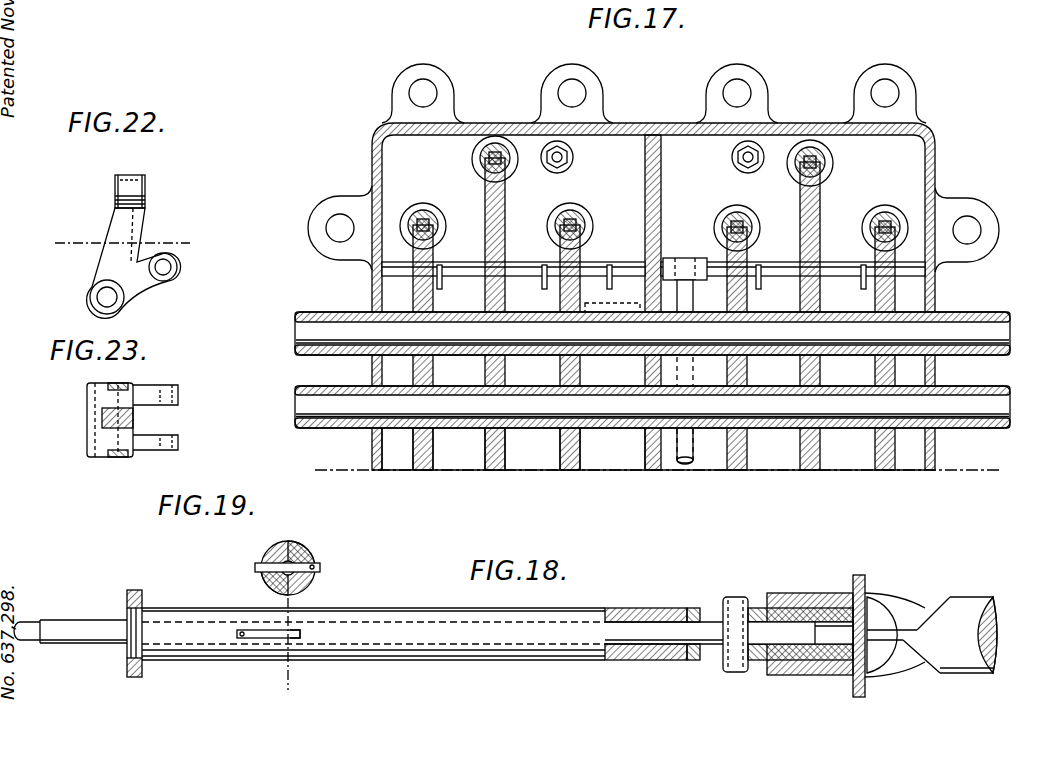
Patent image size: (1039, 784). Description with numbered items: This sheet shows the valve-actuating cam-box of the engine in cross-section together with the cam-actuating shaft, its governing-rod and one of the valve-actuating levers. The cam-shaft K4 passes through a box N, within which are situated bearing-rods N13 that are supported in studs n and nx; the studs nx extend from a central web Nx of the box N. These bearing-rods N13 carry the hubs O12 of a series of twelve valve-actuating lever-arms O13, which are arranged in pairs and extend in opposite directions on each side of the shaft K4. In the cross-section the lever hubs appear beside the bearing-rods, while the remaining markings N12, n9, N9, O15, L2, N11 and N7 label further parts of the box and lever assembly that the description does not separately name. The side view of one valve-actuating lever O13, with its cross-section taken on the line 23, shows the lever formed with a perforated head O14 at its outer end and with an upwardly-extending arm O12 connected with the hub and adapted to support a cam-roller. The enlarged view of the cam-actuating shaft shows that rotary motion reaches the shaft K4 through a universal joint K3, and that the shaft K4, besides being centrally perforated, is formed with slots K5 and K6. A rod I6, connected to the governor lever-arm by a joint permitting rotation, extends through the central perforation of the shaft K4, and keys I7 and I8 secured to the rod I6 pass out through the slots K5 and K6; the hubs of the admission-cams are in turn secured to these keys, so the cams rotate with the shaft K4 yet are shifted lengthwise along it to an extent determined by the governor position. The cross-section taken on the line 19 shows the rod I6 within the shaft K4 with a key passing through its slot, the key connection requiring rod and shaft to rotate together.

In FIG. 17, the box N is at (937, 192).
In FIG. 17, the central web Nx is at (659, 198).
In FIG. 17, the rail plate N12 is at (640, 262).
In FIG. 17, the pins n9 is at (542, 285).
In FIG. 17, the pins N9 is at (773, 268).
In FIG. 17, the valve-actuating lever-arm O13 is at (505, 240).
In FIG. 22, the valve-actuating lever-arm O13 is at (134, 263).
In FIG. 23, the valve-actuating lever-arm O13 is at (133, 420).
In FIG. 17, the valve head collar O15 is at (431, 210).
In FIG. 17, the valve head L2 is at (411, 214).
In FIG. 17, the perforated head O14 is at (508, 158).
In FIG. 22, the perforated head O14 is at (145, 180).
In FIG. 17, the stud nx is at (695, 283).
In FIG. 17, the stud n is at (337, 296).
In FIG. 17, the bearing-rod N13 is at (652, 368).
In FIG. 17, the hub / upwardly-extending arm O12 is at (537, 305).
In FIG. 22, the hub / upwardly-extending arm O12 is at (150, 286).
In FIG. 23, the hub / upwardly-extending arm O12 is at (145, 392).
In FIG. 17, the base line N11 is at (622, 478).
In FIG. 17, the plunger foot N7 is at (690, 460).
In FIG. 22, the section line 23 23 is at (122, 243).
In FIG. 18, the section line 19 19 is at (303, 643).
In FIG. 19, the rod I6 is at (292, 542).
In FIG. 18, the rod I6 is at (672, 579).
In FIG. 19, the cam-shaft K4 is at (303, 549).
In FIG. 18, the cam-shaft K4 is at (628, 600).
In FIG. 19, the slot K5 is at (320, 567).
In FIG. 18, the slot K5 is at (245, 630).
In FIG. 19, the key I7 is at (258, 563).
In FIG. 18, the key I7 is at (283, 640).
In FIG. 18, the slot K6 is at (705, 656).
In FIG. 18, the key I8 is at (741, 675).
In FIG. 18, the universal joint K3 is at (872, 636).